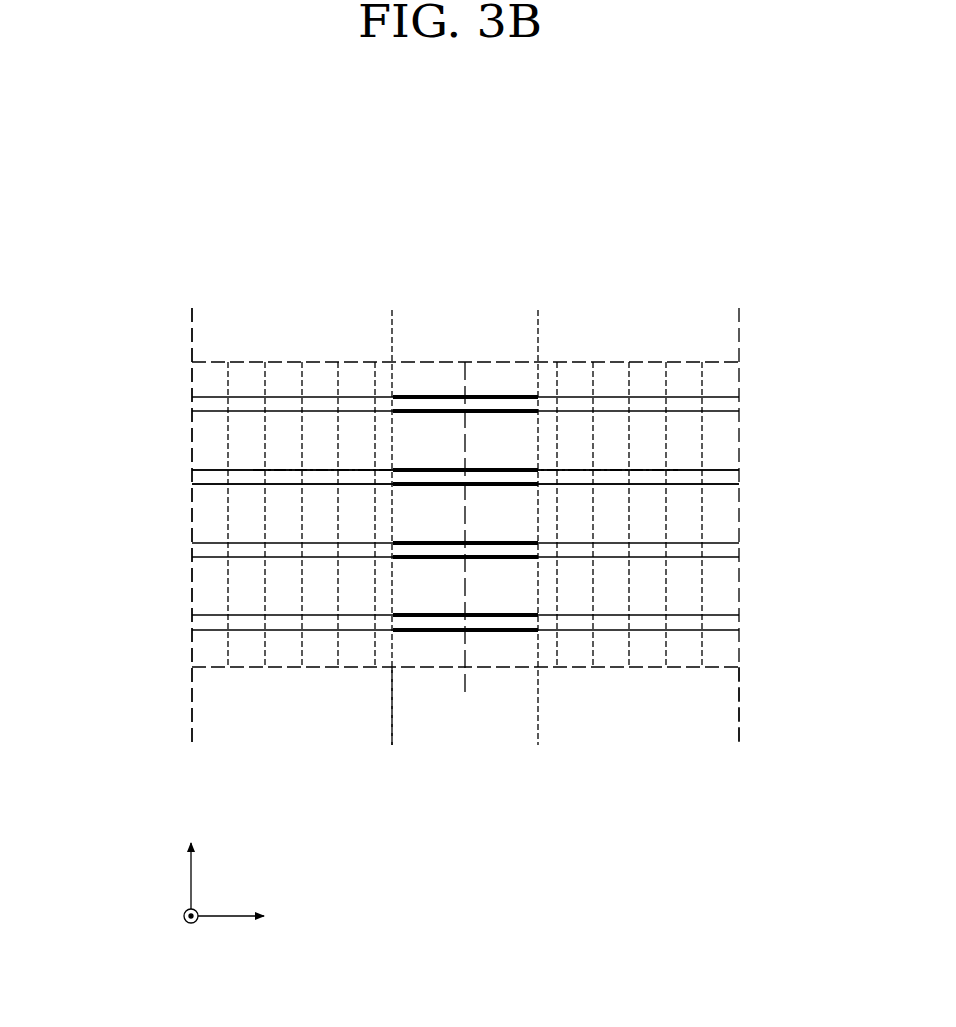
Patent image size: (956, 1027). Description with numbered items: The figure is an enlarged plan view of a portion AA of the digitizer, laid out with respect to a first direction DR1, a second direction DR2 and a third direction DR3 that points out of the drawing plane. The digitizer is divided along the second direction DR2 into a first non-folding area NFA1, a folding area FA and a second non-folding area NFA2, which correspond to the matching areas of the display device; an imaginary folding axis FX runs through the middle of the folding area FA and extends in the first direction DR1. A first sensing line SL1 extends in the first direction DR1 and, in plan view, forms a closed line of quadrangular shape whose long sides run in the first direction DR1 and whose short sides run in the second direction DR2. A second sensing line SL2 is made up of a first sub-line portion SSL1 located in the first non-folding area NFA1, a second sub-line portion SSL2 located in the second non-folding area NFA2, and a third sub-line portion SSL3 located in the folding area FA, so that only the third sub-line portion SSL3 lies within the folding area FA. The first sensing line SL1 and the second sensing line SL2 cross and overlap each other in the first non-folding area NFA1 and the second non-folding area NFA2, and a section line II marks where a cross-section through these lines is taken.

The portion of digitizer AA is at (730, 266).
The folding axis FX is at (465, 527).
The first sub-line portion SSL1 is at (192, 318).
The second sub-line portion SSL2 is at (739, 318).
The third sub-line portion SSL3 is at (392, 318).
The second sensing line SL2 is at (262, 271).
The first sensing line SL1 is at (228, 445).
The section line II-II' II is at (253, 471).
The first non-folding area NFA1 is at (194, 745).
The folding area FA is at (394, 745).
The second non-folding area NFA2 is at (737, 745).
The first direction DR1 is at (190, 863).
The second direction DR2 is at (254, 917).
The third direction DR3 is at (190, 931).